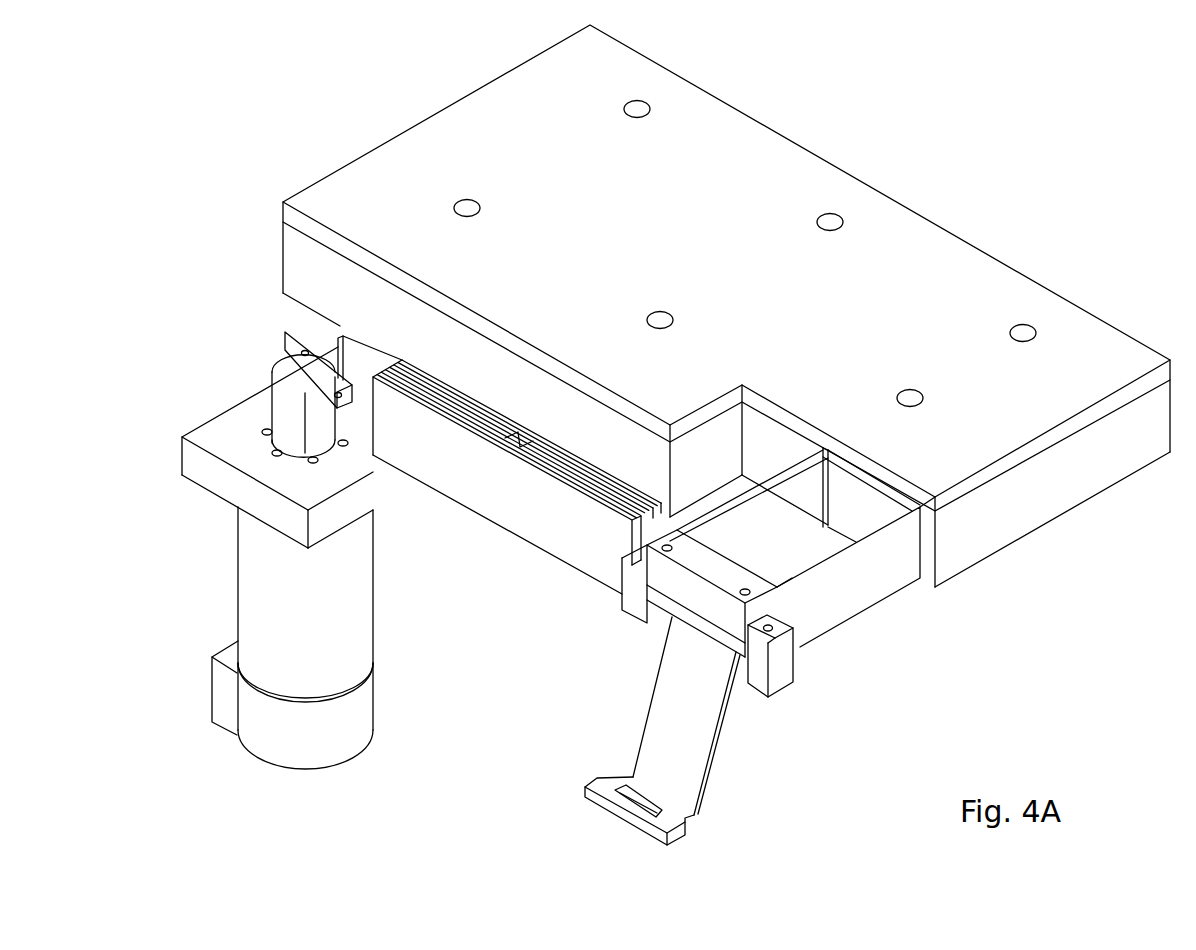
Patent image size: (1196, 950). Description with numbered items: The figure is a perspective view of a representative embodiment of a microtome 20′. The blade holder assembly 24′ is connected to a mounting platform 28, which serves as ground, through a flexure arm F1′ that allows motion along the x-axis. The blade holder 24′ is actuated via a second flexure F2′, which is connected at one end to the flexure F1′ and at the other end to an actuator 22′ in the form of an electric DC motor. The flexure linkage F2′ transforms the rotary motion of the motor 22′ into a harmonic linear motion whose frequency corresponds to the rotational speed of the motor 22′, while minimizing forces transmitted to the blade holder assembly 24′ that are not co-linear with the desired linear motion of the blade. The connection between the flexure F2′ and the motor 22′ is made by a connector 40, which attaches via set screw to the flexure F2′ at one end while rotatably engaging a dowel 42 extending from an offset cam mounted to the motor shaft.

The microtome 20′ is at (412, 778).
The mounting platform 28 is at (743, 122).
The flexure F2′ is at (487, 500).
The flexure arm F1′ is at (862, 597).
The blade holder assembly 24′ is at (660, 697).
The actuator 22′ is at (249, 584).
The connector 40 is at (288, 363).
The dowel 42 is at (300, 352).